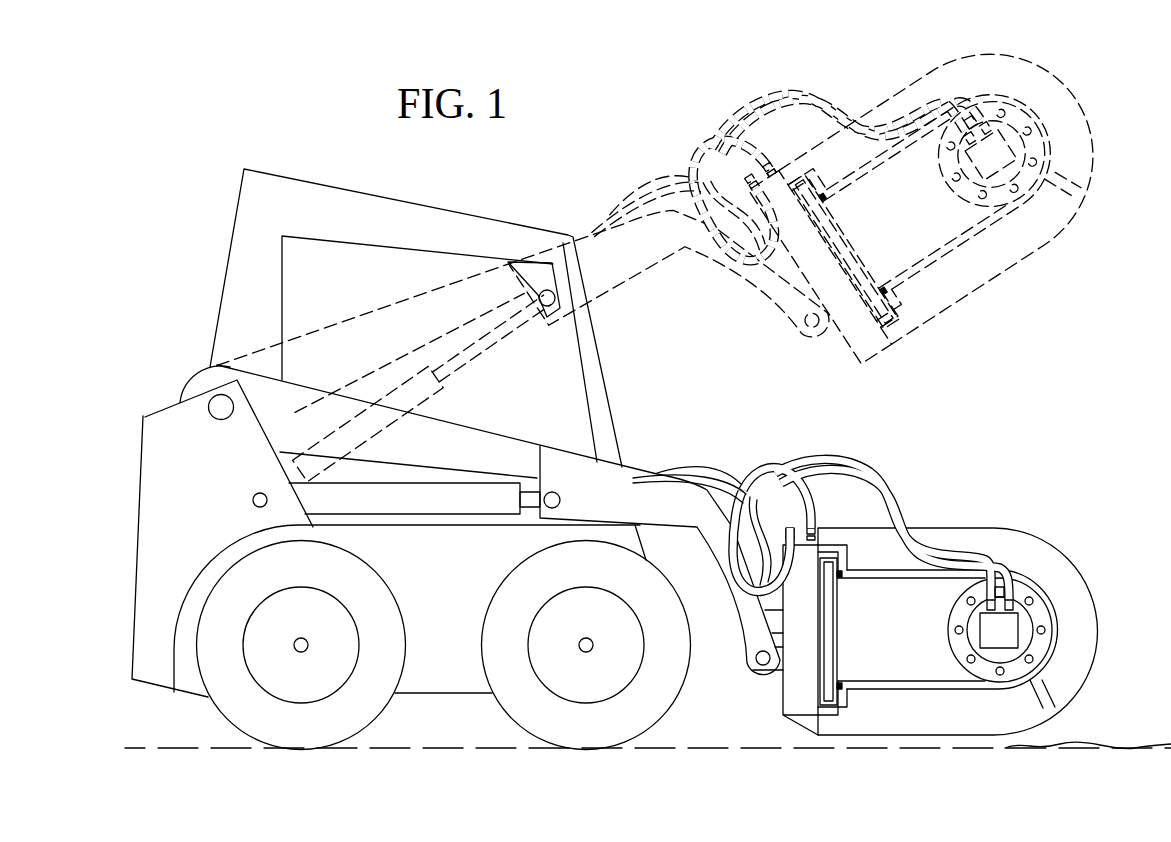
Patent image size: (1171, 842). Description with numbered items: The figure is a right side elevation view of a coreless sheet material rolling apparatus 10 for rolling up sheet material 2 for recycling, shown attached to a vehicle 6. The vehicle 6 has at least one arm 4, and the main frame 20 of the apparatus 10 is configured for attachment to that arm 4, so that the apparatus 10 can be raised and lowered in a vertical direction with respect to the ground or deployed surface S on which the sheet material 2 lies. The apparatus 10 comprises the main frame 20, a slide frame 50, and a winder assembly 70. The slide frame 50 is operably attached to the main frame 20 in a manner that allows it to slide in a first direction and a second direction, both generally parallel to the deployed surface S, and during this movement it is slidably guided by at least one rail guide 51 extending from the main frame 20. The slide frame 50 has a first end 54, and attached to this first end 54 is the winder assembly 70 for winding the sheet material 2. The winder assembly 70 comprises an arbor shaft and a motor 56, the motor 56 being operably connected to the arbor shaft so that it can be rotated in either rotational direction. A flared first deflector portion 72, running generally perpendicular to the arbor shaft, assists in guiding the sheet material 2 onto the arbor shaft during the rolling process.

The vehicle 6 is at (227, 122).
The arm 4 is at (635, 485).
The coreless sheet material rolling apparatus 10 is at (870, 367).
The main frame 20 is at (793, 687).
The slide frame 50 is at (850, 631).
The rail guide 51 is at (841, 573).
The first end 54 is at (845, 699).
The motor 56 is at (968, 650).
The winder assembly 70 is at (1058, 659).
The first deflector portion 72 is at (1088, 628).
The sheet material 2 is at (1141, 745).
The deployed surface S is at (971, 751).